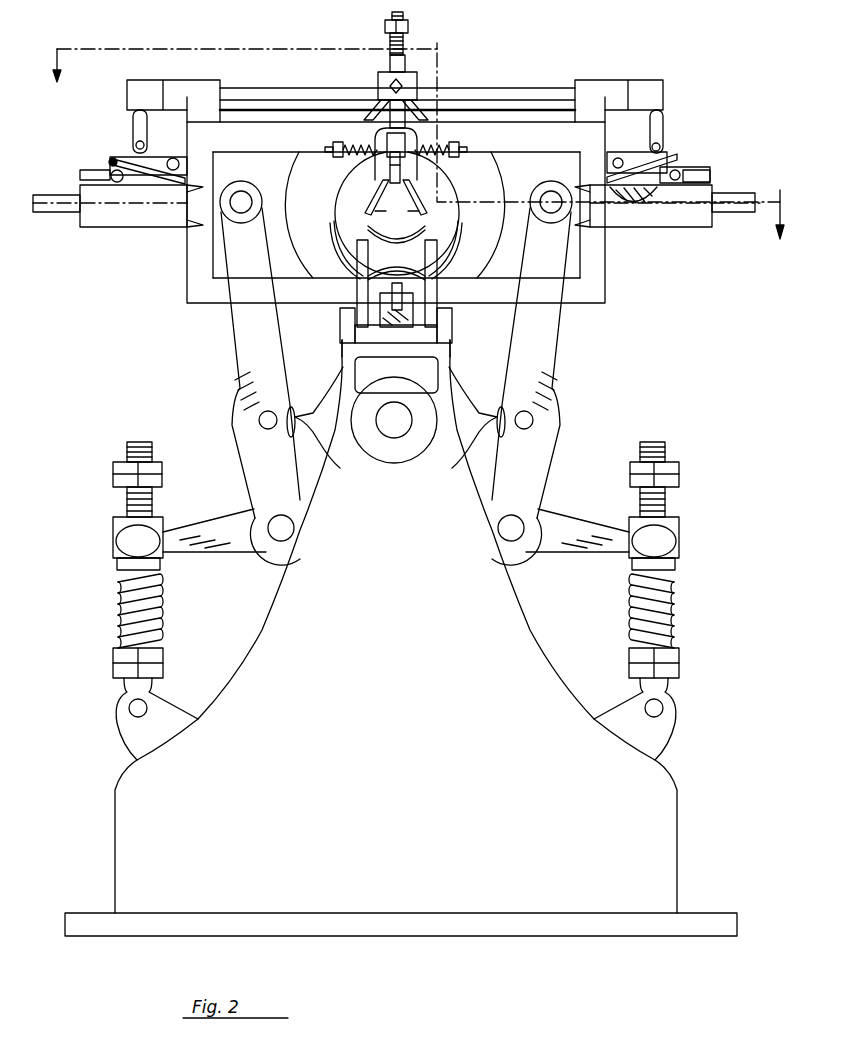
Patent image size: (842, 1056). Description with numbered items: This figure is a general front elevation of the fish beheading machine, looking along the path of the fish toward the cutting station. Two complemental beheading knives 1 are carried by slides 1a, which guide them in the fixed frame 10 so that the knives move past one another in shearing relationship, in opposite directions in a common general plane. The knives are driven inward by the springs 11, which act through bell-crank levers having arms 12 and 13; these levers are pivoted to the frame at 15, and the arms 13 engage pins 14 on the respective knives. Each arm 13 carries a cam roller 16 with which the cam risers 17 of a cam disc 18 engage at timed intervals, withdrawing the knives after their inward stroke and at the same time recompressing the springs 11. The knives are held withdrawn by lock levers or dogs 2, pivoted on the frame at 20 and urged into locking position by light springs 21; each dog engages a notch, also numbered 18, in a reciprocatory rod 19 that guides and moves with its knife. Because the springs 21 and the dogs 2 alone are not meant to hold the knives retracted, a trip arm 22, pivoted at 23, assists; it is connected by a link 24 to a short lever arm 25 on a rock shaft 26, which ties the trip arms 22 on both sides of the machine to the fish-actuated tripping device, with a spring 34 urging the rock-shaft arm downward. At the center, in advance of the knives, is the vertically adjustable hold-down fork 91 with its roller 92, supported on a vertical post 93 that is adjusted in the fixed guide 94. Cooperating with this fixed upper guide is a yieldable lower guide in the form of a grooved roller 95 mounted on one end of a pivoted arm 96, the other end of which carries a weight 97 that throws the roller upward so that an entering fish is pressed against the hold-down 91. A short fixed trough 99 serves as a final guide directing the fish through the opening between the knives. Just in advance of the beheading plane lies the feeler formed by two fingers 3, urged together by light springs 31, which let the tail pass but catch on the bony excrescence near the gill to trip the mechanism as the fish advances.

The beheading knives 1 is at (306, 275).
The slides 1a is at (213, 265).
The lock levers or dogs 2 is at (142, 188).
The fingers of the feeler 3 is at (415, 137).
The fixed frame 10 is at (262, 135).
The springs 11 is at (118, 597).
The bell-crank lever arms 12 is at (228, 550).
The bell-crank lever arms 13 is at (238, 365).
The pins 14 is at (547, 207).
The pivot 15 is at (513, 536).
The cam roller 16 is at (498, 432).
The cam risers 17 is at (489, 398).
The cam disc 18 is at (626, 206).
The reciprocatory rod 19 is at (730, 211).
The pivot of lock levers 20 is at (681, 171).
The light springs 21 is at (708, 177).
The trip arm 22 is at (114, 160).
The pivot of trip arm 23 is at (619, 160).
The link 24 is at (135, 130).
The short lever arm 25 is at (160, 74).
The rock shaft 26 is at (506, 96).
The light springs 31 is at (346, 147).
The spring 34 is at (390, 41).
The hold-down fork 91 is at (366, 208).
The roller 92 is at (392, 165).
The vertical supporting post 93 is at (406, 62).
The fixed guide 94 is at (386, 78).
The grooved roller 95 is at (380, 251).
The pivoted arm 96 is at (362, 289).
The weight 97 is at (406, 334).
The short fixed trough 99 is at (341, 262).